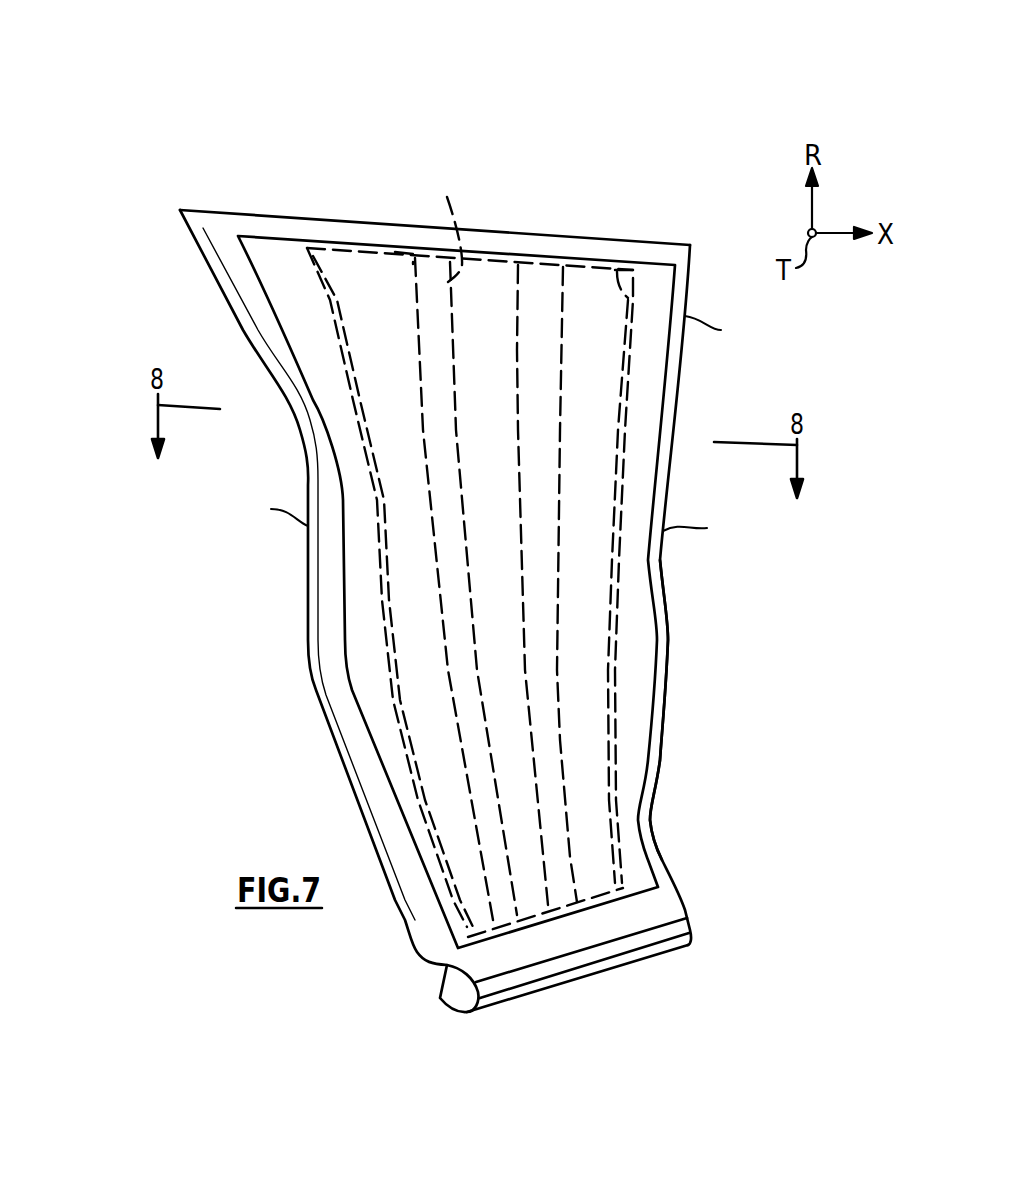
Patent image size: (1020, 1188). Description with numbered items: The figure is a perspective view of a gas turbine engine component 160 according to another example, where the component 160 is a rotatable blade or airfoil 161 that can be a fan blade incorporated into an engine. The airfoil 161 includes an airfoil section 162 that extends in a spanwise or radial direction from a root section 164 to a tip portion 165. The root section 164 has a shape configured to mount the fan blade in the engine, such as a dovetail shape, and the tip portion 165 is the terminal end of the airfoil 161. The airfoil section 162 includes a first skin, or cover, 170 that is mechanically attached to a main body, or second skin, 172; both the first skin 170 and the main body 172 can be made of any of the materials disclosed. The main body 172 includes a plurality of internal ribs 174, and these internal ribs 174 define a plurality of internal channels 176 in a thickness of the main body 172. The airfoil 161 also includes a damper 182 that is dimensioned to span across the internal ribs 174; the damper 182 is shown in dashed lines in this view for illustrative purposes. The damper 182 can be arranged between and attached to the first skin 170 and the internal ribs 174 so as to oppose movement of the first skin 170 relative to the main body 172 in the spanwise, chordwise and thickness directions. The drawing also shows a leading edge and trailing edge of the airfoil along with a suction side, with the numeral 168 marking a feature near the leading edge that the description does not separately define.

The component 160 is at (128, 98).
The airfoil 161 is at (228, 198).
The airfoil section 162 is at (696, 421).
The root section 164 is at (706, 916).
The tip portion 165 is at (355, 216).
The leading edge wall 168 is at (272, 320).
The first skin 170 is at (640, 646).
The main body 172 is at (620, 264).
The internal ribs 174 is at (440, 303).
The internal channels 176 is at (395, 252).
The damper 182 is at (372, 250).